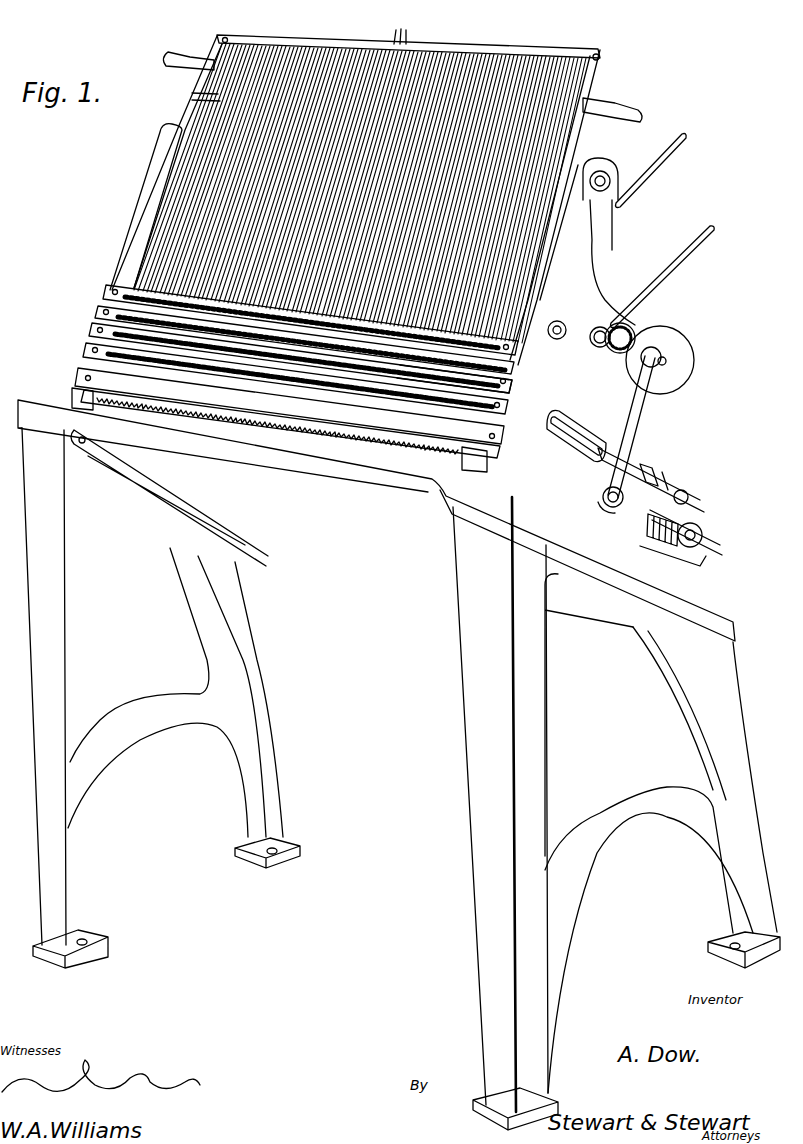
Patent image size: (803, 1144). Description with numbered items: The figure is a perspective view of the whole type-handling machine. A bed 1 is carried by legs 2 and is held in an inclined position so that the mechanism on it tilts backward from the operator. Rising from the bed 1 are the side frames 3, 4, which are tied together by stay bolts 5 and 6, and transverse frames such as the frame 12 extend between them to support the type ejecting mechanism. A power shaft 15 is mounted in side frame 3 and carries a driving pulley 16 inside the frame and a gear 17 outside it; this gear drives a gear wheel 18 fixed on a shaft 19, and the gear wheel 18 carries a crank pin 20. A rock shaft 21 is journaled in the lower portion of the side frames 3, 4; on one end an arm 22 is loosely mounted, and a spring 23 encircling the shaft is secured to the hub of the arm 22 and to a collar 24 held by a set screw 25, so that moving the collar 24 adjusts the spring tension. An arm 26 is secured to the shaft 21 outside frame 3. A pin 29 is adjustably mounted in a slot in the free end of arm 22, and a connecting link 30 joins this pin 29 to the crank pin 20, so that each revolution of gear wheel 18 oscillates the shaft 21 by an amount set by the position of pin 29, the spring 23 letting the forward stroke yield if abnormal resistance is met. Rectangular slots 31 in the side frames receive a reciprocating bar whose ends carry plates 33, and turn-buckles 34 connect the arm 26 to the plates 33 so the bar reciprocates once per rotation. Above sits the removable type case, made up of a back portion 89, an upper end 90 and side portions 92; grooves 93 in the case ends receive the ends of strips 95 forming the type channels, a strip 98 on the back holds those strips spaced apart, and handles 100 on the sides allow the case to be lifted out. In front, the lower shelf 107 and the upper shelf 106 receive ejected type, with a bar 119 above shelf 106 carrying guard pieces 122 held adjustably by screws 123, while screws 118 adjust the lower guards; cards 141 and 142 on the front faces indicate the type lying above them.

The bed 1 is at (72, 401).
The legs 2 is at (248, 672).
The side frame 3 is at (612, 172).
The side frame 4 is at (172, 126).
The stay bolt 5 is at (610, 184).
The stay bolt 6 is at (567, 329).
The transverse frame 12 is at (77, 380).
The power shaft 15 is at (638, 320).
The driving pulley 16 is at (606, 292).
The gear 17 is at (598, 348).
The gear wheel 18 is at (615, 370).
The shaft 19 is at (667, 362).
The crank pin 20 is at (658, 356).
The rock shaft 21 is at (700, 538).
The arm 22 is at (656, 504).
The spring 23 is at (684, 512).
The collar 24 is at (700, 550).
The set screw 25 is at (690, 522).
The arm 26 is at (686, 496).
The pin 29 is at (612, 508).
The connecting link 30 is at (630, 418).
The rectangular slots 31 is at (580, 432).
The plates 33 is at (590, 460).
The turn-buckles 34 is at (668, 472).
The back portion 89 is at (604, 66).
The upper end 90 is at (480, 40).
The side portions 92 is at (240, 36).
The grooves 93 is at (360, 175).
The strips 95 is at (186, 102).
The strip 98 is at (584, 160).
The handles 100 is at (640, 112).
The upper shelf 106 is at (100, 314).
The lower shelf 107 is at (88, 352).
The screws 118 is at (506, 381).
The bar 119 is at (105, 292).
The guard pieces 122 is at (311, 340).
The screws 123 is at (312, 319).
The card 141 is at (95, 333).
The card 142 is at (214, 377).